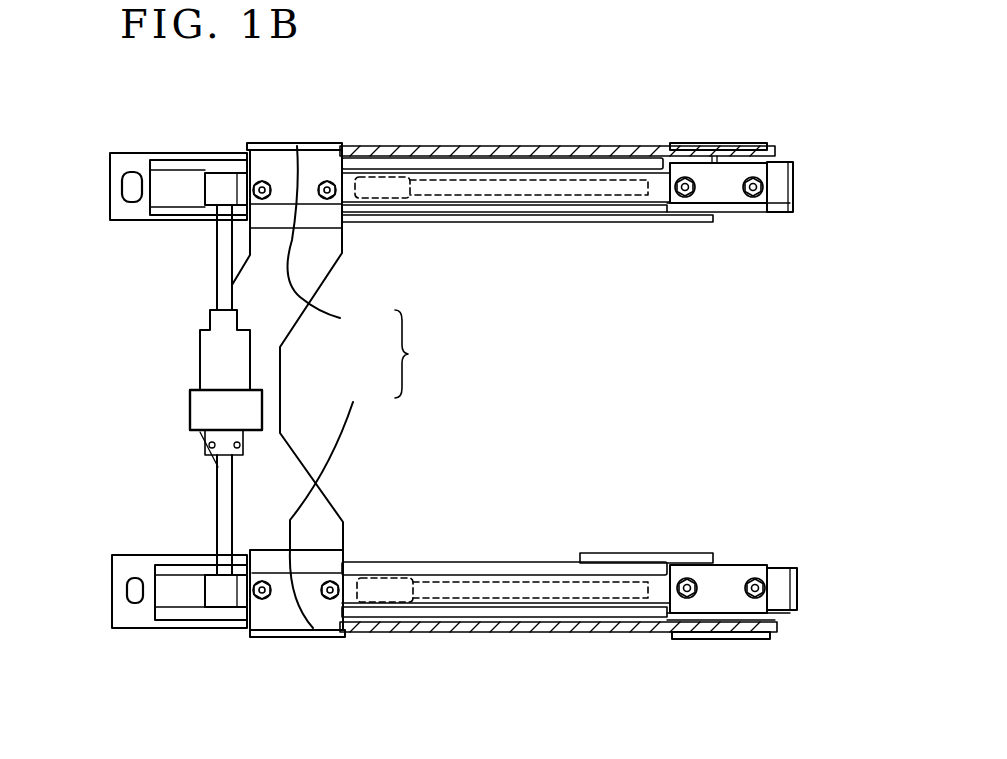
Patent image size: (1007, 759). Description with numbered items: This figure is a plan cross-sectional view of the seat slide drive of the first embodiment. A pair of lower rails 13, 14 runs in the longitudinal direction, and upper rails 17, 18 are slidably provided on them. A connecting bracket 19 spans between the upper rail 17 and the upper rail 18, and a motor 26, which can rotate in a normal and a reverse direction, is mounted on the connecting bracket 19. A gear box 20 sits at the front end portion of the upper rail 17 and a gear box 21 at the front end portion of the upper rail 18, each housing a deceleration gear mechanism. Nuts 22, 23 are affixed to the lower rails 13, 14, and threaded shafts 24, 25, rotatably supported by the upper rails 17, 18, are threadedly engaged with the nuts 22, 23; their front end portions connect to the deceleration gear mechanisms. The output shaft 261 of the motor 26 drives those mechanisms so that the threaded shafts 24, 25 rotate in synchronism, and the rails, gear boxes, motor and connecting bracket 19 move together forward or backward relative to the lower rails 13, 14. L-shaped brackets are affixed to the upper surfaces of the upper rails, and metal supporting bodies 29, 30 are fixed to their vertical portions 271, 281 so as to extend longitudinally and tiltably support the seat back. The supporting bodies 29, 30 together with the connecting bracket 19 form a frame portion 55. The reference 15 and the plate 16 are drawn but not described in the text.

The lower rail 13 is at (533, 210).
The lower rail 14 is at (555, 570).
The base frame 15 is at (118, 197).
The support plate 16 is at (695, 216).
The upper rail 17 is at (782, 213).
The upper rail 18 is at (780, 568).
The connecting bracket 19 is at (285, 318).
The gear box 20 is at (210, 192).
The gear box 21 is at (212, 585).
The nut 22 is at (383, 206).
The nut 23 is at (380, 574).
The threaded shaft 24 is at (465, 208).
The threaded shaft 25 is at (462, 576).
The motor 26 is at (205, 376).
The output shaft 261 is at (217, 277).
The vertical portion 271 is at (262, 143).
The vertical portion 281 is at (693, 143).
The supporting body 29 is at (340, 318).
The supporting body 30 is at (337, 500).
The frame portion 55 is at (421, 354).